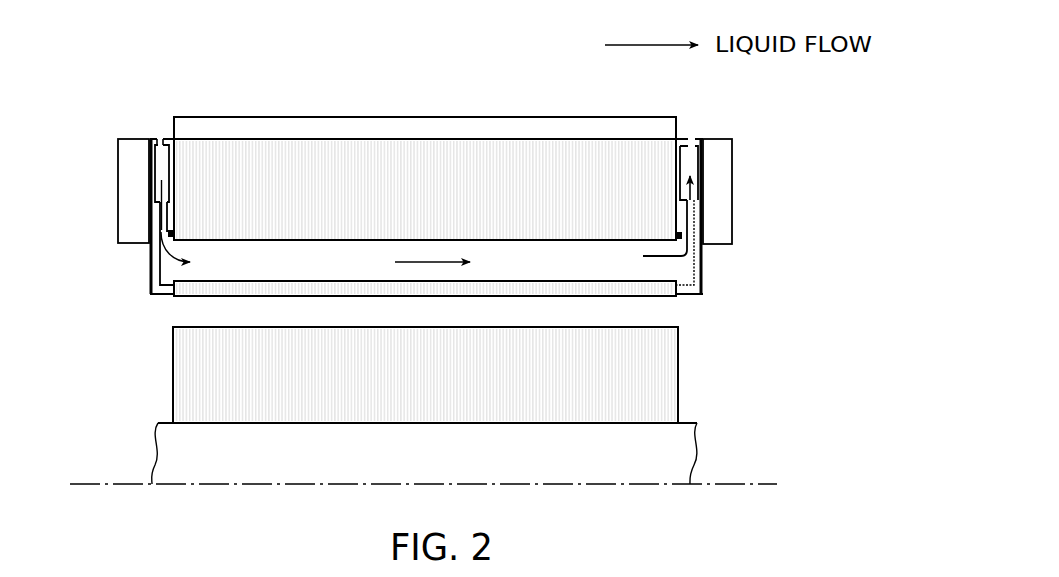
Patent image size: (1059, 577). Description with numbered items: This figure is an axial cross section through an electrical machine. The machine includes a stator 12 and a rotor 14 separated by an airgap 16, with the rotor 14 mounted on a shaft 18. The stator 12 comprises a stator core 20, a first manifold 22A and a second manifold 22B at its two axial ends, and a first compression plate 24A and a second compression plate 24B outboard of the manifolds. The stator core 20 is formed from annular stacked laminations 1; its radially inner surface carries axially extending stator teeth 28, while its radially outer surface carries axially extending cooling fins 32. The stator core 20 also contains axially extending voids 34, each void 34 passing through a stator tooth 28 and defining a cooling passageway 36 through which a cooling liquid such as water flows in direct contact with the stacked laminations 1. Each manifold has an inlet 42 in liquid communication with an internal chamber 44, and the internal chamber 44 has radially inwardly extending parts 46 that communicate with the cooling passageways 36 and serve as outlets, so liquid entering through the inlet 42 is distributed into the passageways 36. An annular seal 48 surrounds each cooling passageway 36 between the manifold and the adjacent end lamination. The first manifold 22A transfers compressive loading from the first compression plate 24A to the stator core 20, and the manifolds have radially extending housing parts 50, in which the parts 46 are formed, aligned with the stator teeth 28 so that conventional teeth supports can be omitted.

The stacked laminations 1 is at (467, 147).
The stator 12 is at (710, 116).
The rotor 14 is at (686, 368).
The airgap 16 is at (663, 311).
The shaft 18 is at (678, 446).
The stator core 20 is at (592, 147).
The first manifold 22A is at (157, 252).
The second manifold 22B is at (700, 262).
The first compression plate 24A is at (127, 190).
The second compression plate 24B is at (714, 197).
The stator teeth 28 is at (193, 292).
The cooling fins 32 is at (323, 128).
The voids 34 is at (322, 261).
The cooling passageway 36 is at (455, 279).
The inlet 42 is at (160, 136).
The internal chamber 44 is at (153, 157).
The radially inwardly extending parts 46 is at (158, 218).
The annular seal 48 is at (174, 230).
The radially extending parts 50 is at (153, 277).